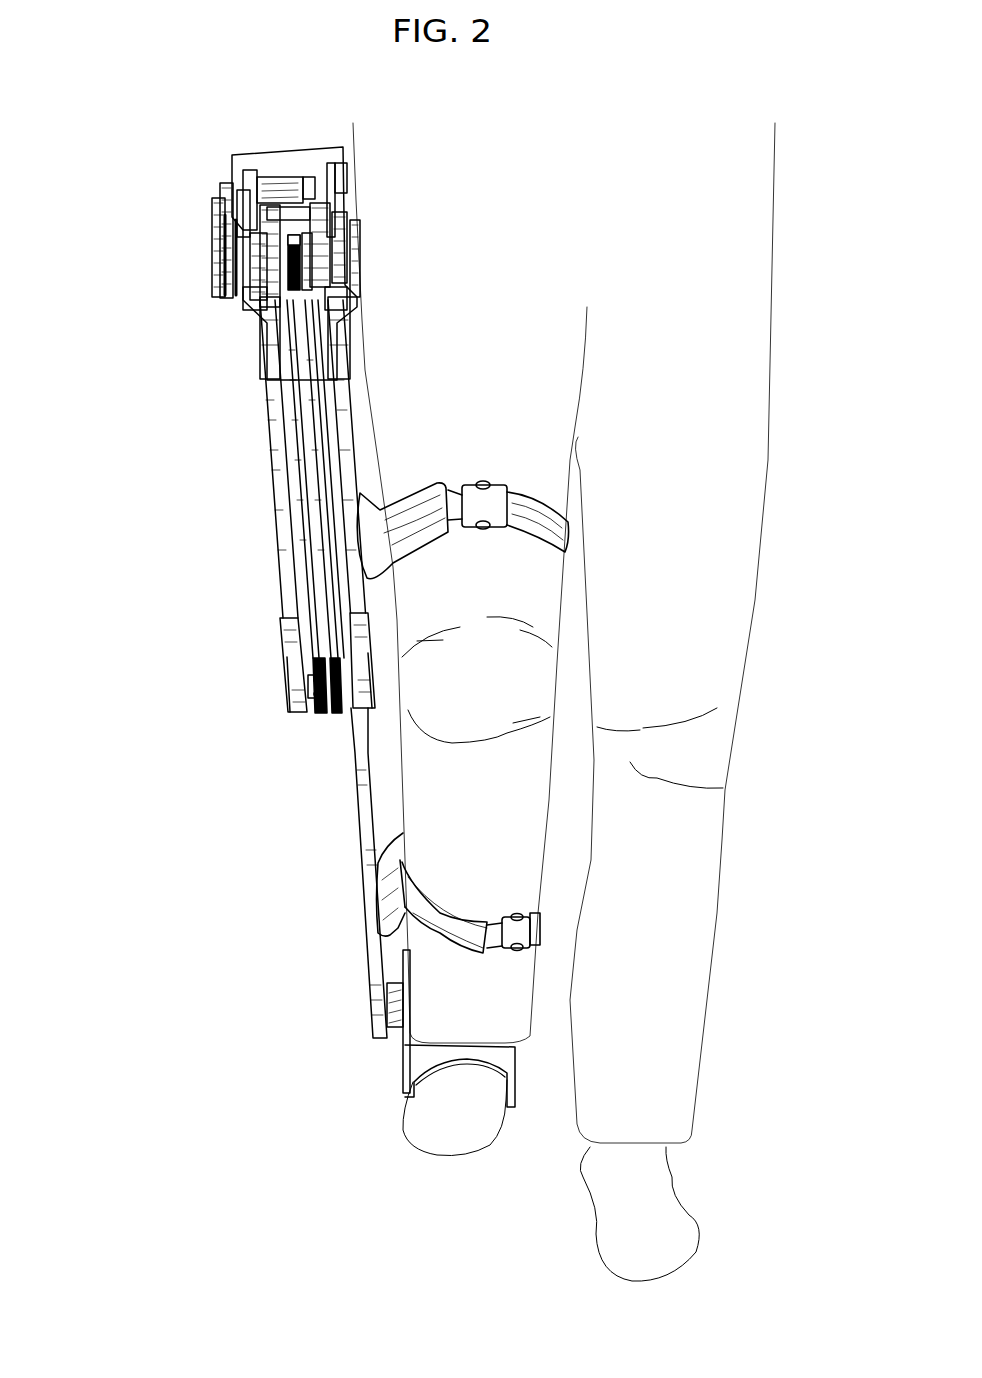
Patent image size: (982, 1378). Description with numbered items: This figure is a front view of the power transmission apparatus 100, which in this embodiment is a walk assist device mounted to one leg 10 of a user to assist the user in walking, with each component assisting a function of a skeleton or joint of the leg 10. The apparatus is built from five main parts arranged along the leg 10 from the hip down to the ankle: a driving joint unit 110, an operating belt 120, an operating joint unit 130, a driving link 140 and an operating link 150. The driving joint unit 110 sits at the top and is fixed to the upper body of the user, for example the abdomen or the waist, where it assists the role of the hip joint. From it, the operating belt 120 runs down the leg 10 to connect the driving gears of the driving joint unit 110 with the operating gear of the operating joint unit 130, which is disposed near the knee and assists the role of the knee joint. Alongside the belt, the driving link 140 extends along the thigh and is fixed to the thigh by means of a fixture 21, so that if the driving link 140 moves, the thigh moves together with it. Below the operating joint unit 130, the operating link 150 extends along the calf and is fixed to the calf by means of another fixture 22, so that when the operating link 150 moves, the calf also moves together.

The power transmission apparatus 100 is at (157, 111).
The leg 10 is at (535, 593).
The fixture 21 is at (538, 513).
The fixture 22 is at (541, 923).
The driving joint unit 110 is at (195, 270).
The operating belt 120 is at (308, 550).
The operating joint unit 130 is at (262, 683).
The driving link 140 is at (278, 470).
The operating link 150 is at (367, 841).